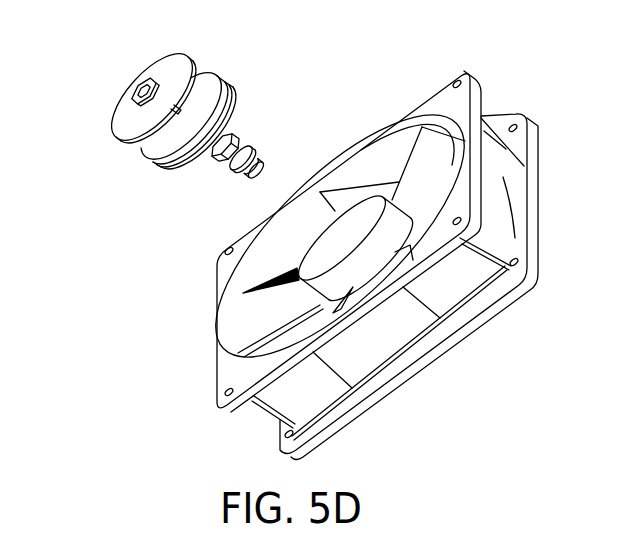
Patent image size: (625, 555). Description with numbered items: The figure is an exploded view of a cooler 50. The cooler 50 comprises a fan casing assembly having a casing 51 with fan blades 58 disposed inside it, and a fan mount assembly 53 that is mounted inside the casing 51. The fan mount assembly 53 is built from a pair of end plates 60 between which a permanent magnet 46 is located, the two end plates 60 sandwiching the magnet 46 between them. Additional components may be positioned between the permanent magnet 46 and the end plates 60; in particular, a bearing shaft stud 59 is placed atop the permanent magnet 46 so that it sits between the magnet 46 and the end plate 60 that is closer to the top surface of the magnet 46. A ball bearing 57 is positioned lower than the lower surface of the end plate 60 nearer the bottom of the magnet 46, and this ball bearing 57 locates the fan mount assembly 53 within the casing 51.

The cooler 50 is at (487, 390).
The casing 51 is at (480, 92).
The fan mount assembly 53 is at (254, 88).
The permanent magnet 46 is at (157, 155).
The ball bearing 57 is at (230, 172).
The fan blades 58 is at (428, 170).
The bearing shaft stud 59 is at (140, 138).
The end plates 60 is at (112, 113).